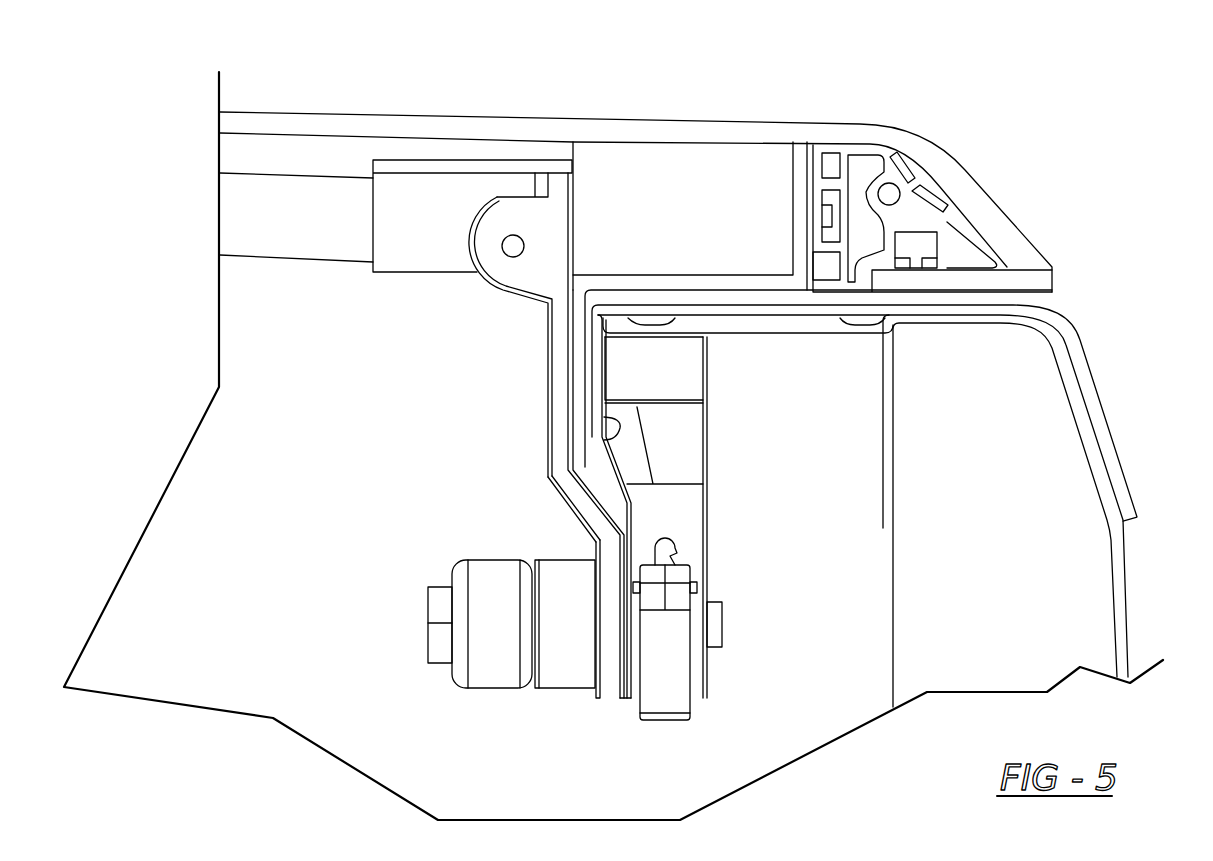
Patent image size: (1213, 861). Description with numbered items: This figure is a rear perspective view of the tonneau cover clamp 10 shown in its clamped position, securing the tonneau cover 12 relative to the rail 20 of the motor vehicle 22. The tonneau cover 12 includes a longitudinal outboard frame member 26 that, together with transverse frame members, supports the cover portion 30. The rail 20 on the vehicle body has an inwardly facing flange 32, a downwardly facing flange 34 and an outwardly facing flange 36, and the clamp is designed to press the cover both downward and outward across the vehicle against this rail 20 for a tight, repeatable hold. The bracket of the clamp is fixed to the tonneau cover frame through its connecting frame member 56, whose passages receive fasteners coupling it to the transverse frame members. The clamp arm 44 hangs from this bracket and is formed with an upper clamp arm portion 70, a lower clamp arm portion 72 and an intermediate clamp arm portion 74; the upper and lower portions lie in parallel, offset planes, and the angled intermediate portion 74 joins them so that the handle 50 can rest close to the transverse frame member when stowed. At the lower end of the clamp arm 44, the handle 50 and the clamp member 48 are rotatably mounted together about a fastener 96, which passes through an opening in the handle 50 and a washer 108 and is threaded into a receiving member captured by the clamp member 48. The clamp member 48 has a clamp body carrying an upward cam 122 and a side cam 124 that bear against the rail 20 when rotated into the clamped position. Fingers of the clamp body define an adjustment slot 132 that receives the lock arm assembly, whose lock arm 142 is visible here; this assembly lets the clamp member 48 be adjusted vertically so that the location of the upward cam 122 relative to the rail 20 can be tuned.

The tonneau cover clamp 10 is at (740, 601).
The tonneau cover 12 is at (670, 62).
The rail 20 is at (838, 346).
The motor vehicle 22 is at (1132, 301).
The longitudinal outboard frame member 26 is at (920, 198).
The cover portion 30 is at (683, 128).
The inwardly facing flange 32 is at (879, 473).
The downwardly facing flange 34 is at (769, 345).
The outwardly facing flange 36 is at (617, 425).
The clamp arm 44 is at (556, 330).
The clamp member 48 is at (687, 382).
The handle 50 is at (493, 690).
The connecting frame member 56 is at (452, 172).
The upper clamp arm portion 70 is at (556, 368).
The lower clamp arm portion 72 is at (605, 642).
The intermediate clamp arm portion 74 is at (578, 500).
The fastener 96 is at (443, 640).
The washer 108 is at (563, 635).
The upward cam 122 is at (668, 350).
The side cam 124 is at (600, 387).
The adjustment slot 132 is at (667, 543).
The lock arm 142 is at (670, 700).